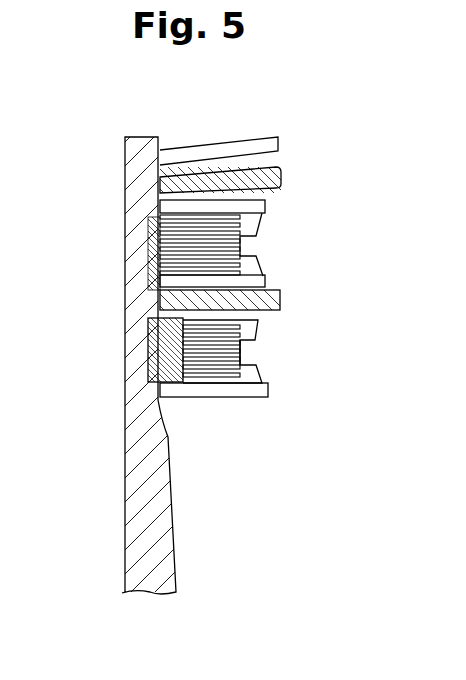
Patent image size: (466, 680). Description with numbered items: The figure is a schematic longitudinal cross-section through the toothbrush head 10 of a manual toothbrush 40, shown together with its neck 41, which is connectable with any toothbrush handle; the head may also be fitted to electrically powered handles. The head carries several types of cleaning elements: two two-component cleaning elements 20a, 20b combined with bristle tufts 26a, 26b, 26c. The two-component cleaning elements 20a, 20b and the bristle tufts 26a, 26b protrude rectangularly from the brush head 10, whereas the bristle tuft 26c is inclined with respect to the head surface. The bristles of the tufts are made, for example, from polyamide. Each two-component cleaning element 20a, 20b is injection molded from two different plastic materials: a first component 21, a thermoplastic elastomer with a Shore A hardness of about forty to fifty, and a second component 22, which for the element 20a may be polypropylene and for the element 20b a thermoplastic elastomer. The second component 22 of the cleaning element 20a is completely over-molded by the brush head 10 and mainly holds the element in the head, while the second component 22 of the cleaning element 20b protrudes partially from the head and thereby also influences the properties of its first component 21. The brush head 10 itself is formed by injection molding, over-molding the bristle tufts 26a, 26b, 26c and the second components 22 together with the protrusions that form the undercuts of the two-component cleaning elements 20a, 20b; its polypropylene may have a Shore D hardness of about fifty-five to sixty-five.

The manual toothbrush 40 is at (120, 206).
The toothbrush head 10 is at (137, 290).
The neck 41 is at (175, 538).
The bristle tuft 26a is at (262, 157).
The bristle tuft 26b is at (281, 303).
The bristle tuft 26c is at (247, 177).
The 2K cleaning element 20a is at (246, 247).
The 2K cleaning element 20b is at (248, 352).
The first component 21 is at (222, 357).
The second component 22 is at (148, 245).